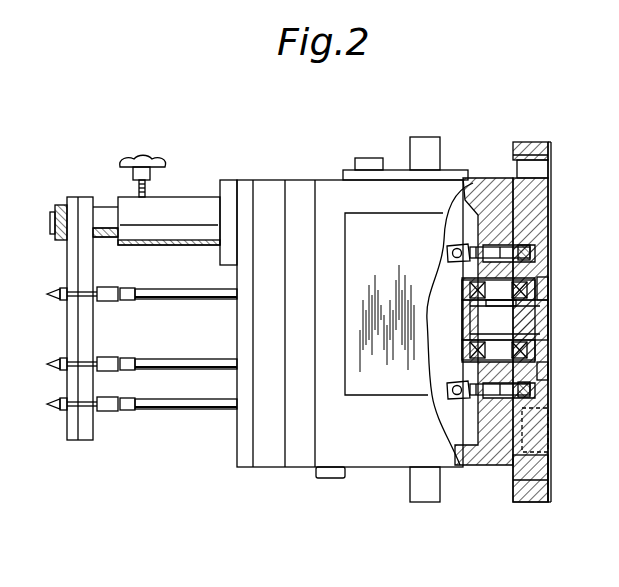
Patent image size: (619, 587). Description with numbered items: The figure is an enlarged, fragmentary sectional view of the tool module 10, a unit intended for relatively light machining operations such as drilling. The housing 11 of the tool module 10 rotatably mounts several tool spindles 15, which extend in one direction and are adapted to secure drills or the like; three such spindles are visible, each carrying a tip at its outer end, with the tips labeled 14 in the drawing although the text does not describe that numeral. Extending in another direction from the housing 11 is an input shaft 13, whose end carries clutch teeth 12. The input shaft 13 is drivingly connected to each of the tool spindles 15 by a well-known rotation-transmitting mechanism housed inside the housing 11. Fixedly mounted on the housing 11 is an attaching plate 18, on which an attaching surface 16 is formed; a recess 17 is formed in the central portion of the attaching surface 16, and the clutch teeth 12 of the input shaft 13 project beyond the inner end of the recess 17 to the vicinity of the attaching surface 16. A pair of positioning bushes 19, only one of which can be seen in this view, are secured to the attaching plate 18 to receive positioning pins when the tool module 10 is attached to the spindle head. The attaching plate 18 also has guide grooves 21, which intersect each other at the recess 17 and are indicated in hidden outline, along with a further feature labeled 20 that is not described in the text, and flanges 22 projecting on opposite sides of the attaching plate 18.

The tool module 10 is at (302, 178).
The housing 11 is at (479, 200).
The clutch teeth 12 is at (548, 308).
The input shaft 13 is at (547, 350).
The probe tips 14 is at (52, 299).
The tool spindles 15 is at (186, 300).
The attaching surface 16 is at (553, 215).
The recess 17 is at (550, 290).
The attaching plate 18 is at (540, 479).
The positioning bushes 19 is at (553, 152).
The hidden member 20 is at (552, 426).
The guide grooves 21 is at (550, 370).
The flanges 22 is at (530, 145).